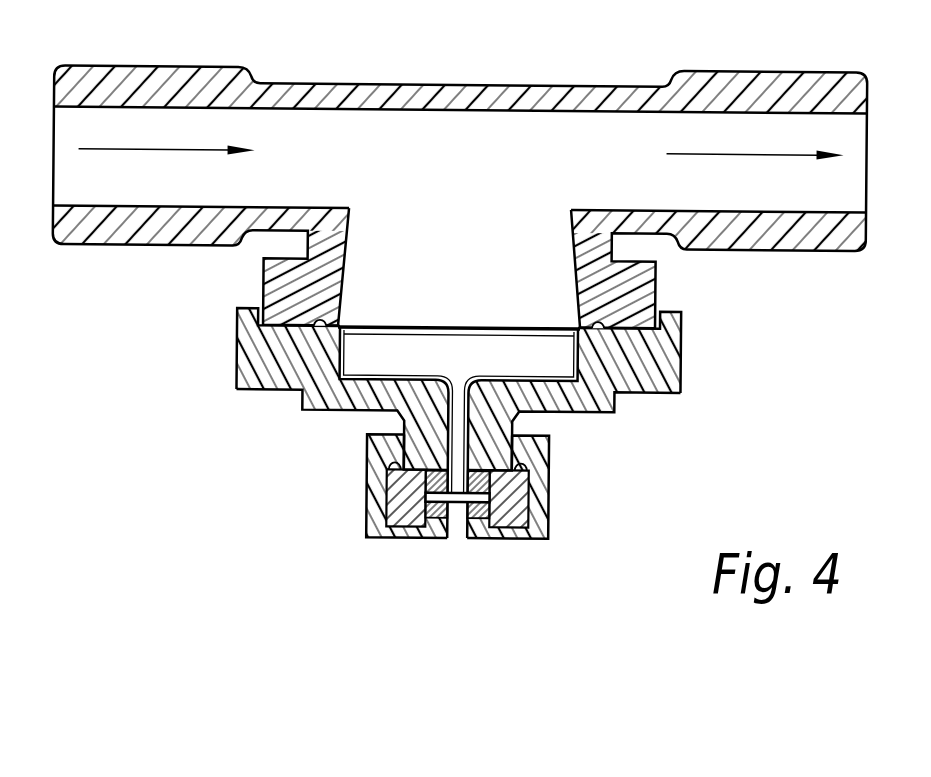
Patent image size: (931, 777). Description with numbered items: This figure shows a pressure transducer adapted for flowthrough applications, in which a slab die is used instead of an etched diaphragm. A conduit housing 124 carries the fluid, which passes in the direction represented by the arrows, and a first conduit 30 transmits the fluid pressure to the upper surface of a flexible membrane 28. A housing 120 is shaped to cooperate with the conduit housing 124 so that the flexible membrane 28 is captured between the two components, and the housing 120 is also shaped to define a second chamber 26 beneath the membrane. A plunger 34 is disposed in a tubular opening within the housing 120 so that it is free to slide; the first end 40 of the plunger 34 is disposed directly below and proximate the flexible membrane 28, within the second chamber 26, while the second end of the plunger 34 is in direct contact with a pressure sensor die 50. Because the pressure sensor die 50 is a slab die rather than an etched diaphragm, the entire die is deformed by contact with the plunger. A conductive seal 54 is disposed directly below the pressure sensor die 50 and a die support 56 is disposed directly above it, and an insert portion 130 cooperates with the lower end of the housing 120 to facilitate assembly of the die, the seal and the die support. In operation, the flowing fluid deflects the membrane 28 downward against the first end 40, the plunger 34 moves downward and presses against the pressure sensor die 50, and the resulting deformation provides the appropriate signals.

The conduit housing 124 is at (355, 84).
The flexible membrane 28 is at (385, 327).
The first conduit 30 is at (532, 272).
The housing 120 is at (682, 358).
The second chamber 26 is at (612, 414).
The plunger 34 is at (462, 440).
The first end of the plunger 40 is at (362, 363).
The die support 56 is at (420, 518).
The conductive seal 54 is at (482, 518).
The pressure sensor die 50 is at (456, 500).
The insert portion 130 is at (424, 530).